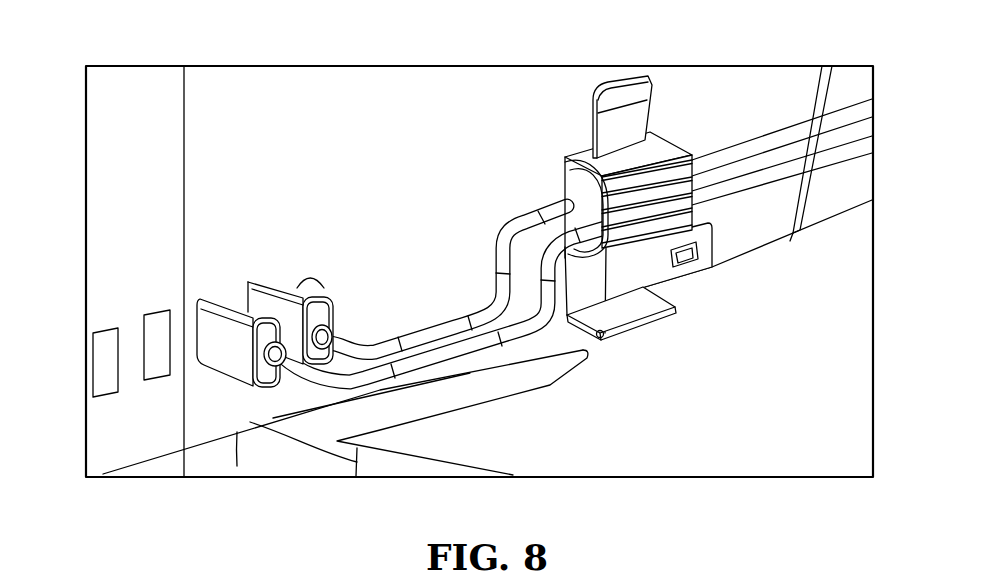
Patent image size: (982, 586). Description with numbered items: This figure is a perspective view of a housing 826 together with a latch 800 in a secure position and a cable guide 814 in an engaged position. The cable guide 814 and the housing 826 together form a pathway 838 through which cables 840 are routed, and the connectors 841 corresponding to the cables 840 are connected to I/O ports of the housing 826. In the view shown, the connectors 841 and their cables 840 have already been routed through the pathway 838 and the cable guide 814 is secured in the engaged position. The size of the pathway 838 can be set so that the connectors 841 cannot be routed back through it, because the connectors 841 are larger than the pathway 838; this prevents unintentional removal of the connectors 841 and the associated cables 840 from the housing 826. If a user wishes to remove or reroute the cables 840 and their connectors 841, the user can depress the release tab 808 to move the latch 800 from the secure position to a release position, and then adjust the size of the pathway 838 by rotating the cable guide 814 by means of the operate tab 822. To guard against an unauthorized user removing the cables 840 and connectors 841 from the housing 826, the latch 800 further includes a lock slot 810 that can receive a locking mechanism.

The latch 800 is at (657, 261).
The release tab 808 is at (643, 298).
The lock slot 810 is at (693, 258).
The cable guide 814 is at (565, 158).
The operate tab 822 is at (624, 118).
The housing 826 is at (130, 104).
The pathway 838 is at (601, 338).
The cables 840 is at (834, 112).
The connectors 841 is at (268, 290).